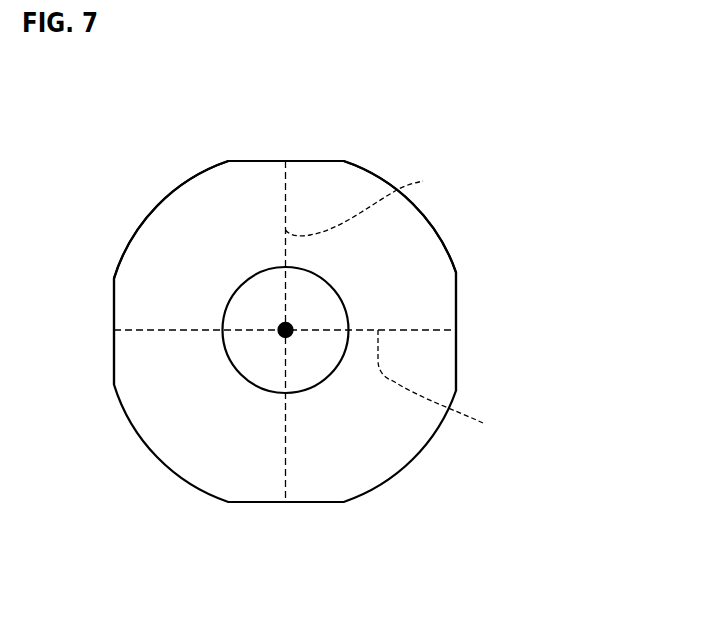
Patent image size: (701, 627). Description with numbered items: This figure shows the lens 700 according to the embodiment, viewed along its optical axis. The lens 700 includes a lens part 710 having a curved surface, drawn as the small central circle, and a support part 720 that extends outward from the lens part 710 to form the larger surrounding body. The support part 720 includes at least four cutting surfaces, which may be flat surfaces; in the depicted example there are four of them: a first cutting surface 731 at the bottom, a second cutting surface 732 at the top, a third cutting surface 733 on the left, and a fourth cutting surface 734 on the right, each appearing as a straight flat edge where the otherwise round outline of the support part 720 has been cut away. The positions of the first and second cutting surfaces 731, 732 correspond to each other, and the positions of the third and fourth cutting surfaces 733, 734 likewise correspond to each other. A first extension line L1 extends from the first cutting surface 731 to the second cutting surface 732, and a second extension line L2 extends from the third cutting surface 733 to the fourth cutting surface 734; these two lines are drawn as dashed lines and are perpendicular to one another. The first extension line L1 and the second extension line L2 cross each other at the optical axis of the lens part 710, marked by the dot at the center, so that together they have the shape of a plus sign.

The lens 700 is at (156, 160).
The lens part 710 is at (250, 358).
The support part 720 is at (150, 228).
The first cutting surface 731 is at (295, 503).
The second cutting surface 732 is at (287, 161).
The third cutting surface 733 is at (114, 322).
The fourth cutting surface 734 is at (456, 340).
The element optical axis is at (295, 330).
The first extension line L1 is at (366, 205).
The second extension line L2 is at (441, 387).